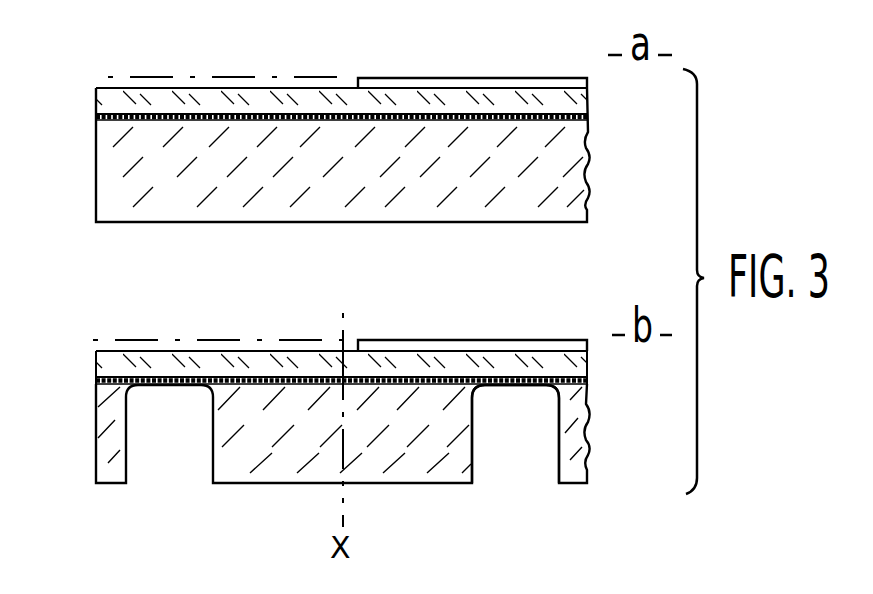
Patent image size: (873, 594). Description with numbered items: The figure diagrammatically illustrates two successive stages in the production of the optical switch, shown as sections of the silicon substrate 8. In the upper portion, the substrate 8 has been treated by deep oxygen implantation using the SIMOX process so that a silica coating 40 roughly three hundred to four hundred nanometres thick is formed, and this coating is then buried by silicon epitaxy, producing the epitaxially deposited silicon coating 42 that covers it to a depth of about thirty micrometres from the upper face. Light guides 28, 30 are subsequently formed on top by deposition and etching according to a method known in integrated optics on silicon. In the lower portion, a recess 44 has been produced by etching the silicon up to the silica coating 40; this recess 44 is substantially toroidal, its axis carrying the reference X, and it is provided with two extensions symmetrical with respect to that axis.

The silicon substrate 8 is at (137, 192).
The light guide 28 is at (430, 78).
The light guide 30 is at (258, 77).
The silica coating 40 is at (96, 116).
The epitaxially deposited silicon coating 42 is at (110, 97).
The recess 44 is at (520, 442).